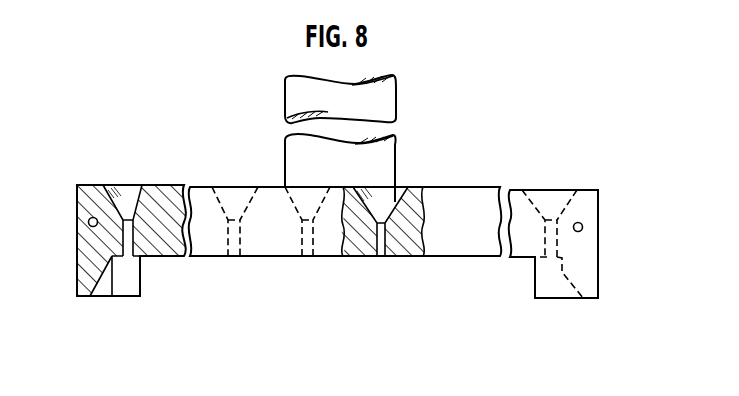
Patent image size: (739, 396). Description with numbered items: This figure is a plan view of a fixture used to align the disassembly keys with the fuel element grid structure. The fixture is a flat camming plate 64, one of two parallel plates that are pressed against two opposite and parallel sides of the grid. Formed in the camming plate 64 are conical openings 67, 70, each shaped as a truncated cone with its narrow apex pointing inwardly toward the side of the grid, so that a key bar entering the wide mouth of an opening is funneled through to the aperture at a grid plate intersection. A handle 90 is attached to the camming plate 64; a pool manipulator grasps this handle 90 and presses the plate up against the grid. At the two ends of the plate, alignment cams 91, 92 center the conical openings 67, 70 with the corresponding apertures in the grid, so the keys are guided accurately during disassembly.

The camming plate 64 is at (422, 178).
The conical opening 67 is at (242, 186).
The conical opening 70 is at (315, 186).
The handle 90 is at (385, 100).
The alignment cam 91 is at (550, 298).
The alignment cam 92 is at (122, 285).